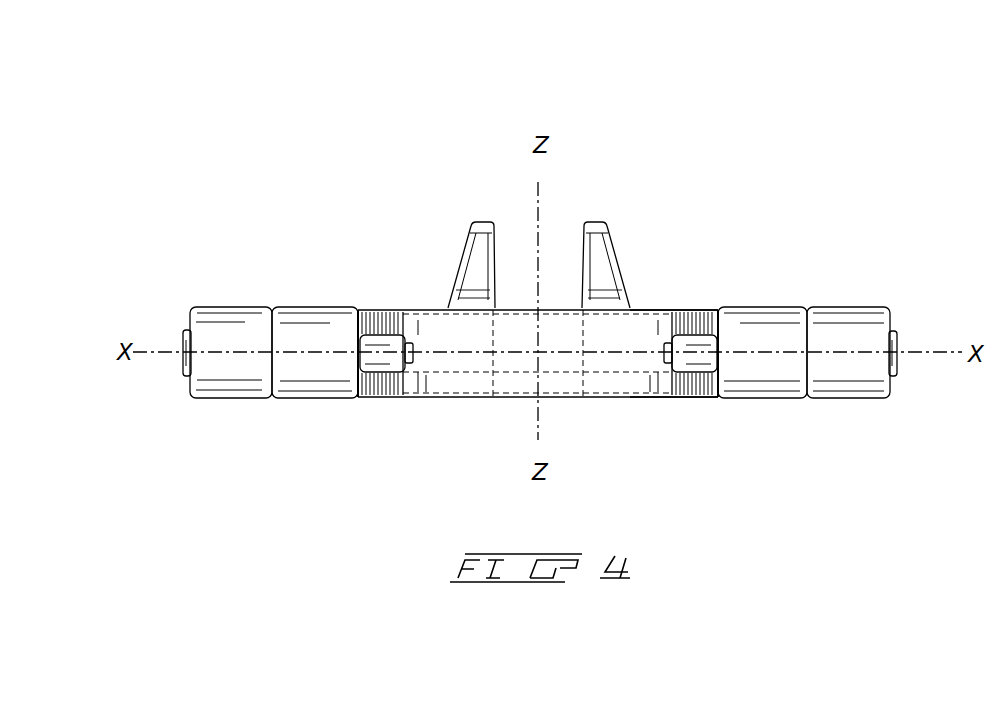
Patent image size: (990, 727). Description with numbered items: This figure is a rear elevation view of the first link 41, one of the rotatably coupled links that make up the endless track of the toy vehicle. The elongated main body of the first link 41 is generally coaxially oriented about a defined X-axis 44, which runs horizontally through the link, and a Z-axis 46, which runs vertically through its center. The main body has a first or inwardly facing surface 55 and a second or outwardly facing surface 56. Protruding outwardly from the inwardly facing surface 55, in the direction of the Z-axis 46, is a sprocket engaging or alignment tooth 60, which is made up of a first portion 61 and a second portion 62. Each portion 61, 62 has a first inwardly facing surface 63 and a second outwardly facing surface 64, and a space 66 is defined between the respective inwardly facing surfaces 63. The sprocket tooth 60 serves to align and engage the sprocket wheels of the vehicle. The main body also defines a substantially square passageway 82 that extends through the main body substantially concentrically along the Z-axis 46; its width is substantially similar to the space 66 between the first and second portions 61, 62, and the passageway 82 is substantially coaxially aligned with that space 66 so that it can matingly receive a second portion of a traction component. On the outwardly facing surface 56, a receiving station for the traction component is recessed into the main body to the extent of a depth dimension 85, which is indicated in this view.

The first link 41 is at (425, 97).
The X-axis 44 is at (153, 349).
The Z-axis 46 is at (538, 185).
The first or inwardly facing surface 55 is at (678, 308).
The second or outwardly facing surface 56 is at (675, 398).
The sprocket engaging or alignment tooth 60 is at (548, 227).
The first portion 61 is at (483, 222).
The second portion 62 is at (600, 222).
The first inwardly facing surface 63 is at (495, 277).
The second outwardly facing surface 64 is at (620, 268).
The space 66 is at (567, 220).
The passageway 82 is at (559, 378).
The depth dimension 85 is at (465, 380).